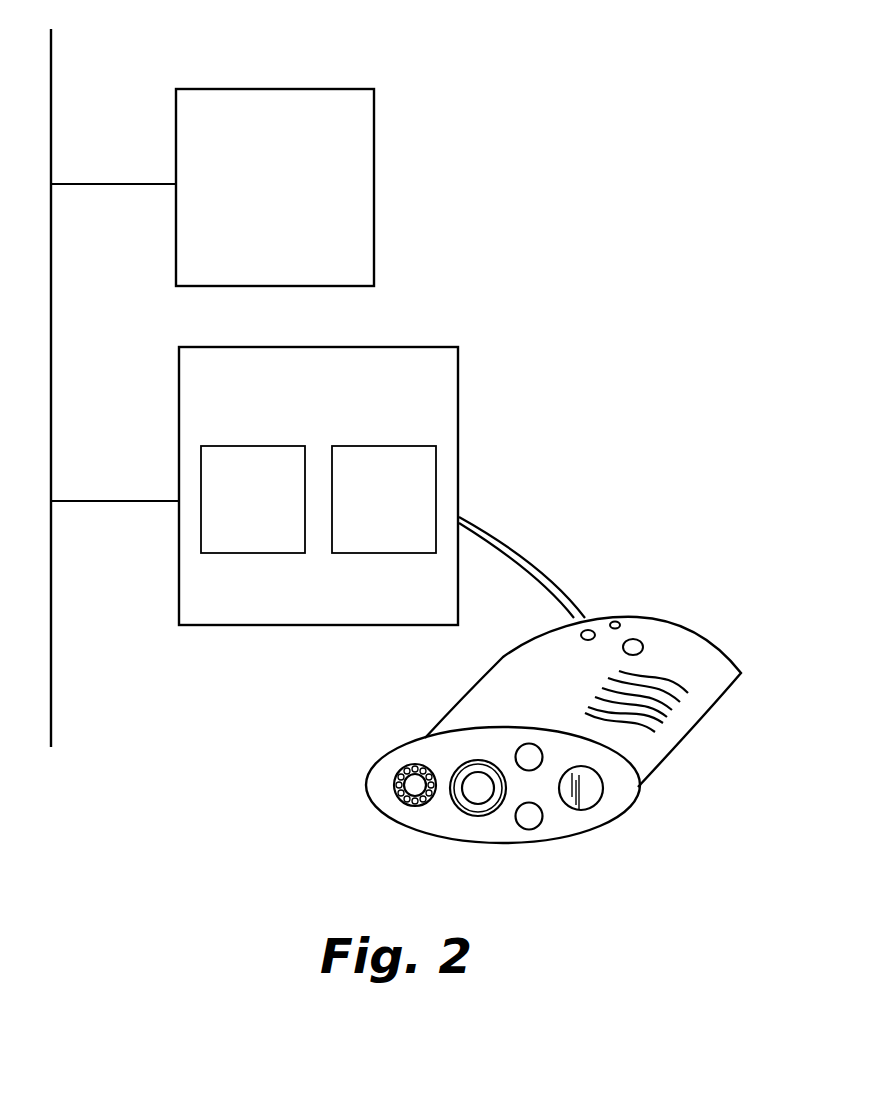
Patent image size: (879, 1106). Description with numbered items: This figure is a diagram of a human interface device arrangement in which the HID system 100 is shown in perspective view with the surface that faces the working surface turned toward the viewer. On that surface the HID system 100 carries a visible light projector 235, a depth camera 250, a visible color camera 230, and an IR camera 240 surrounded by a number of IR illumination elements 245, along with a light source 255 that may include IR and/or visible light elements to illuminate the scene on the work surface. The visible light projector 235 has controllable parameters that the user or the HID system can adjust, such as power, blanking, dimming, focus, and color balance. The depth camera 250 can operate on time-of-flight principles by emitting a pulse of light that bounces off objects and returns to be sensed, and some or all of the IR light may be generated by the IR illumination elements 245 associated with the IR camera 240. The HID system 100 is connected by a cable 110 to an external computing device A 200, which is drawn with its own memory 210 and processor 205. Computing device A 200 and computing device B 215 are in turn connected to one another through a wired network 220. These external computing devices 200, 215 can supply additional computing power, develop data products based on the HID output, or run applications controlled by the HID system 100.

The wired network 220 is at (52, 65).
The computing device B 215 is at (275, 187).
The computing device A 200 is at (318, 486).
The memory 210 is at (253, 499).
The processor 205 is at (384, 499).
The cable 110 is at (540, 565).
The HID system 100 is at (727, 662).
The IR illumination elements 245 is at (398, 771).
The IR camera 240 is at (410, 788).
The visible light projector 235 is at (467, 807).
The depth camera 250 is at (527, 750).
The visible color camera 230 is at (530, 820).
The light source 255 is at (598, 790).